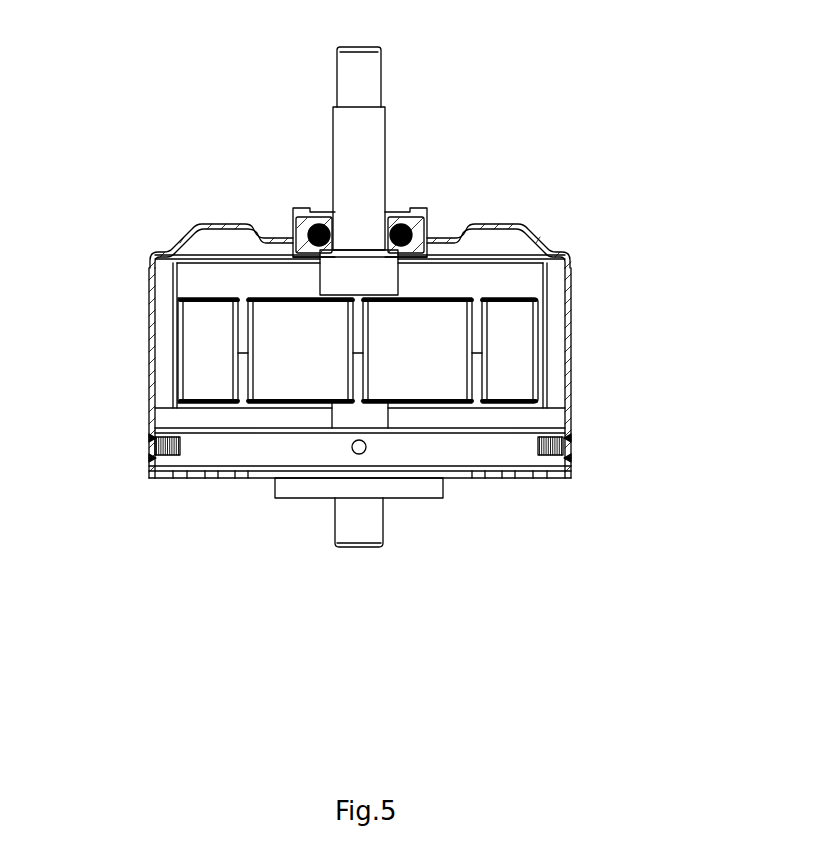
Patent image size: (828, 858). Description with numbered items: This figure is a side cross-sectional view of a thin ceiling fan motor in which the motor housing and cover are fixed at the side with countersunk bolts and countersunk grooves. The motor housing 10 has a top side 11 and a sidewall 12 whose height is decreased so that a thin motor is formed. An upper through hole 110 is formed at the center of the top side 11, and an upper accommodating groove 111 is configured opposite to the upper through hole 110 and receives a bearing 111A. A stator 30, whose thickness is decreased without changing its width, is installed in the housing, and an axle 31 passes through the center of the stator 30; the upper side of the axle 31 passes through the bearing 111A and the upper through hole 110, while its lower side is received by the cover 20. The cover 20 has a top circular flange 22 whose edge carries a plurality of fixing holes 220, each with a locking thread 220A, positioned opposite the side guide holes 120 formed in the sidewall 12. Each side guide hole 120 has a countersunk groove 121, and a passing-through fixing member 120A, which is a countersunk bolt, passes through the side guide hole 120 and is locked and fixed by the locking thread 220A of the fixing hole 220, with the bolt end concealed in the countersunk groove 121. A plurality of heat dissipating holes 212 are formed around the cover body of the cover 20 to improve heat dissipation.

The motor housing 10 is at (536, 210).
The top side 11 is at (435, 245).
The upper through hole 110 is at (412, 212).
The upper accommodating groove 111 is at (425, 227).
The bearing 111A is at (393, 217).
The sidewall 12 is at (567, 323).
The cover 20 is at (513, 492).
The top circular flange 22 is at (547, 462).
The heat dissipating holes 212 is at (240, 480).
The side guide holes 120 is at (150, 441).
The passing-through fixing member 120A is at (155, 437).
The countersunk groove 121 is at (150, 459).
The fixing holes 220 is at (561, 445).
The locking thread 220A is at (563, 435).
The stator 30 is at (186, 287).
The axle 31 is at (358, 82).